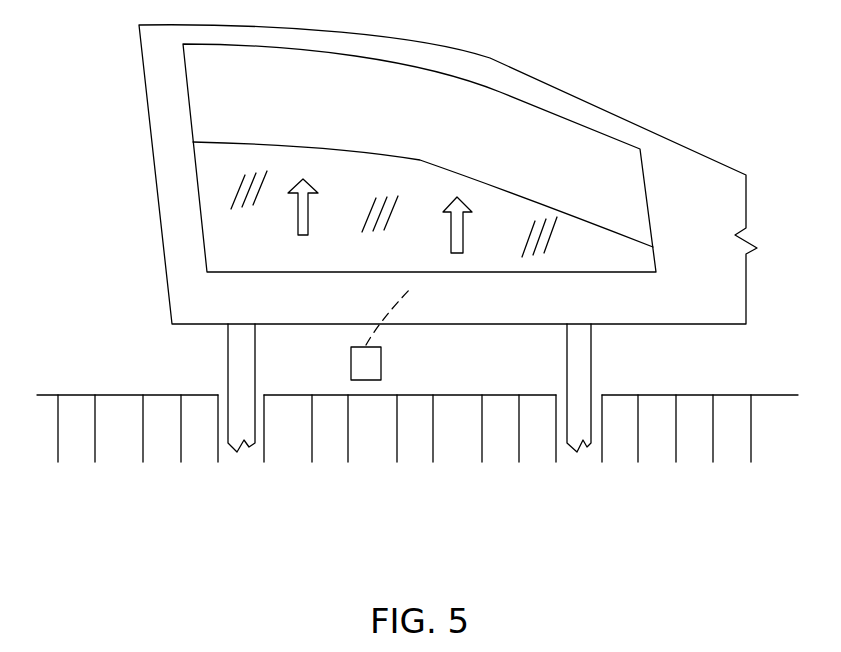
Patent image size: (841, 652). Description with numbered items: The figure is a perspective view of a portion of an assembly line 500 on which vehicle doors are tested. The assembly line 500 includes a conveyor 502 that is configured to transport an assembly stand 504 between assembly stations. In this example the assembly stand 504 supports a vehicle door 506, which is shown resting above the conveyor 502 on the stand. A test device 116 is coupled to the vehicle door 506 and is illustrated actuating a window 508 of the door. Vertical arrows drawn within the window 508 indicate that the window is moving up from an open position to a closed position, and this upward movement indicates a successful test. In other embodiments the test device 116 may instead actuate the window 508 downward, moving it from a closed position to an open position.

The assembly line 500 is at (95, 364).
The conveyor 502 is at (165, 420).
The assembly stand 504 is at (242, 358).
The vehicle door 506 is at (497, 63).
The window 508 is at (372, 148).
The test device 116 is at (381, 357).